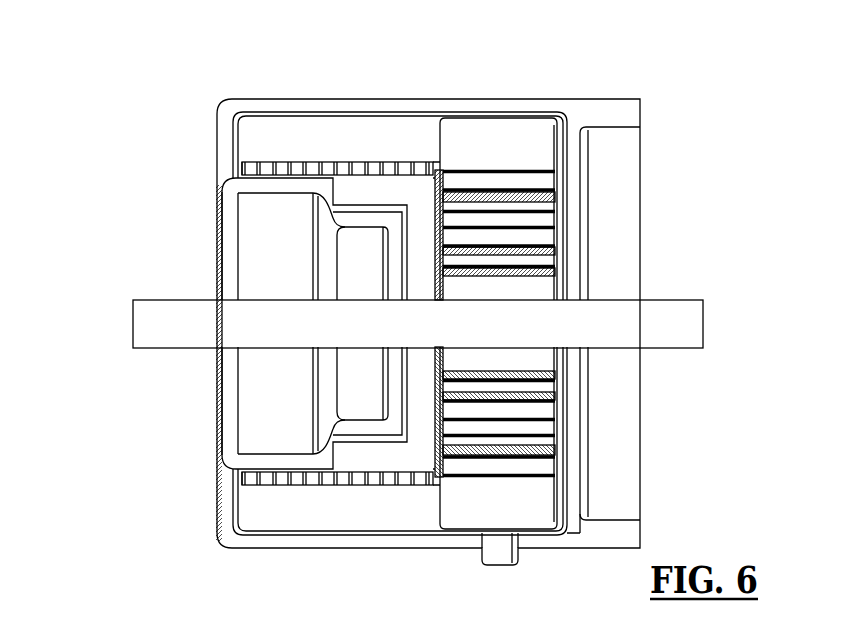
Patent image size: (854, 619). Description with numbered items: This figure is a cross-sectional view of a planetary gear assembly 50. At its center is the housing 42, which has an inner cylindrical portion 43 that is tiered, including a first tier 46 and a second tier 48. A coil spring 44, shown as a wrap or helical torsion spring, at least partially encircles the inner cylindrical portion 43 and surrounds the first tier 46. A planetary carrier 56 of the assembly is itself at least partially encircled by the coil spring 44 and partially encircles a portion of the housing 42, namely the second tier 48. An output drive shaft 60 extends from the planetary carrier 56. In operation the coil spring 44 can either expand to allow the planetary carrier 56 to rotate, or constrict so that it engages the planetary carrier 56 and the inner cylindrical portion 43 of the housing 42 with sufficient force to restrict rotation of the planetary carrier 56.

The planetary gear assembly 50 is at (122, 118).
The housing 42 is at (315, 542).
The inner cylindrical portion 43 is at (254, 188).
The coil spring 44 is at (262, 478).
The first tier 46 is at (288, 185).
The second tier 48 is at (357, 214).
The planetary carrier 56 is at (397, 189).
The output drive shaft 60 is at (158, 323).